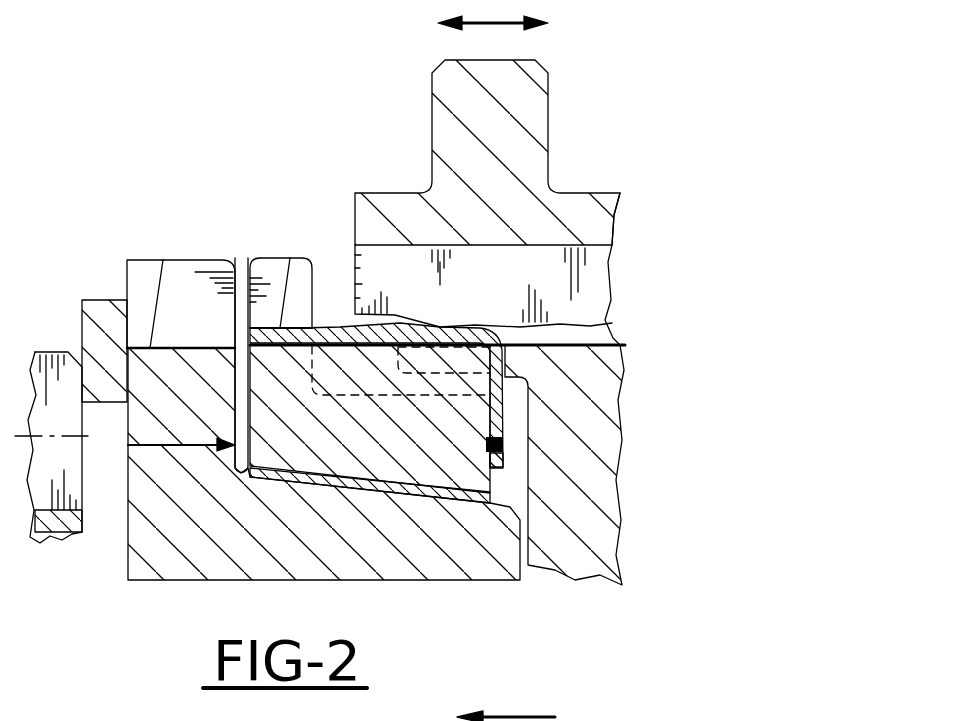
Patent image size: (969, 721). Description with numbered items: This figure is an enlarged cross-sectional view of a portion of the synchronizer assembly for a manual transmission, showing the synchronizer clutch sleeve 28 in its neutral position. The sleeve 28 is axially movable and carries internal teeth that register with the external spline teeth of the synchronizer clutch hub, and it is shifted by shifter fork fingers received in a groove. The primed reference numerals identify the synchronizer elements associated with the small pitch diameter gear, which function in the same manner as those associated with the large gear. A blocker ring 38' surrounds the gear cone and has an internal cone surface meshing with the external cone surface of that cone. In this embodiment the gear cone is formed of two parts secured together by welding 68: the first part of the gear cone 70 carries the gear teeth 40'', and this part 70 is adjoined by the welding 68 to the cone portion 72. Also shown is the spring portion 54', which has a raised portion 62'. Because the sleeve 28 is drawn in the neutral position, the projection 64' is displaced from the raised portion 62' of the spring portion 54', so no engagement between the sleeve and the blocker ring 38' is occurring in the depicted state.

The synchronizer clutch sleeve 28 is at (523, 163).
The gear teeth 40'' is at (175, 268).
The raised portion 62' is at (376, 331).
The projection 64' is at (483, 286).
The spring portion 54' is at (300, 347).
The first part of the gear cone 70 is at (175, 421).
The welding 68 is at (230, 455).
The cone portion 72 is at (345, 555).
The blocker ring 38' is at (437, 491).